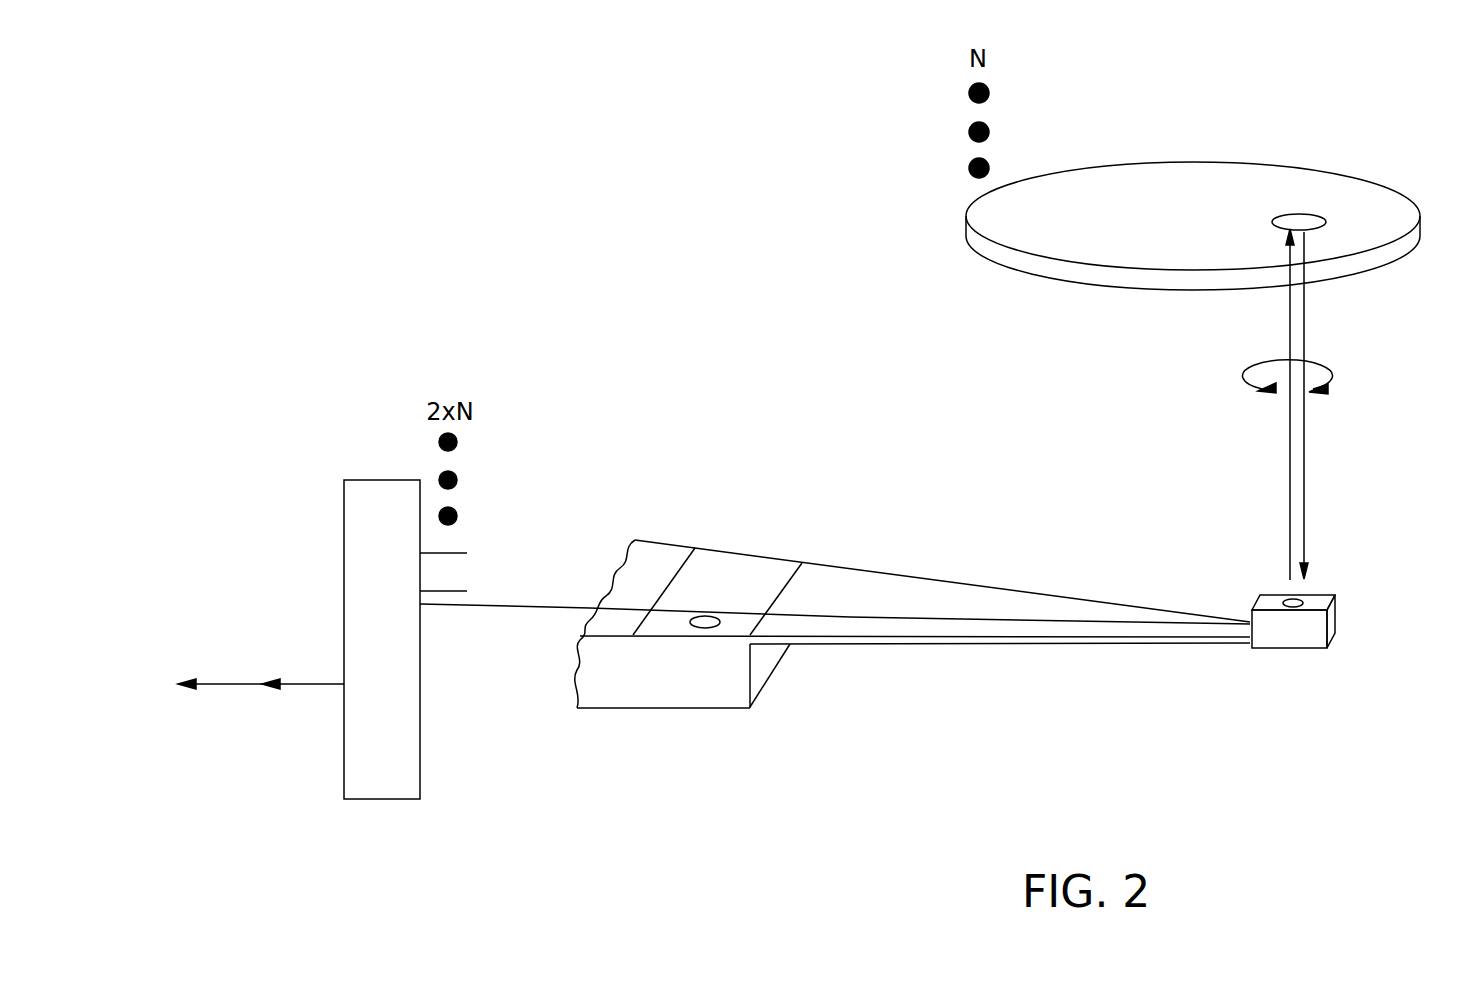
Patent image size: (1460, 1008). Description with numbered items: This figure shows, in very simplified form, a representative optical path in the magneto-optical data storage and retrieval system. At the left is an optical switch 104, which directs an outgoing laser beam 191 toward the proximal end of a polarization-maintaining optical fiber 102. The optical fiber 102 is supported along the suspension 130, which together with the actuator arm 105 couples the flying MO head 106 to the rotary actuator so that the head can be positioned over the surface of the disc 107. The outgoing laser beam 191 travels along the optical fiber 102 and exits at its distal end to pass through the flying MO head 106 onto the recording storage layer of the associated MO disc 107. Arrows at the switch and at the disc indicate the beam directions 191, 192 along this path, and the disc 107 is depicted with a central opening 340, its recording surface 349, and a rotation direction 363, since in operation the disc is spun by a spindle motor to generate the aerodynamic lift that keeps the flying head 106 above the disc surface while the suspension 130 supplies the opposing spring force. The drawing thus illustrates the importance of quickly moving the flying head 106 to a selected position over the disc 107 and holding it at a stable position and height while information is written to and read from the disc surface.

The optical fiber 102 is at (520, 604).
The optical switch 104 is at (374, 480).
The actuator arm 105 is at (685, 708).
The flying MO head 106 is at (1297, 650).
The MO disc 107 is at (987, 252).
The suspension 130 is at (912, 643).
The outgoing laser beam 191 is at (1290, 432).
The second direction 192 is at (1304, 497).
The disk hole 340 is at (1317, 223).
The disk surface 349 is at (1177, 177).
The rotation direction 363 is at (1338, 364).